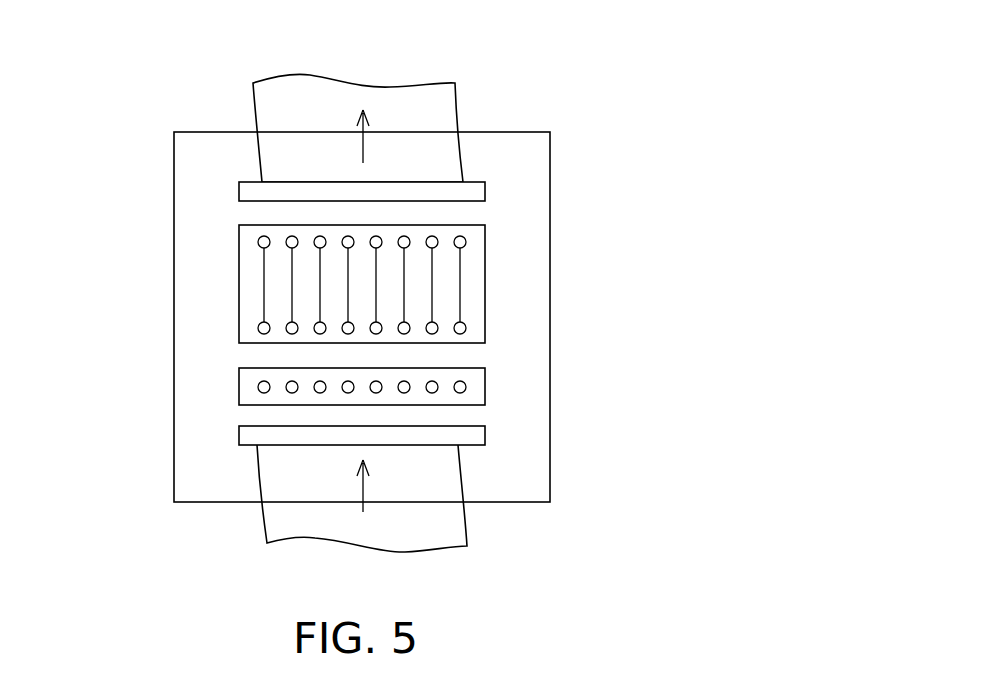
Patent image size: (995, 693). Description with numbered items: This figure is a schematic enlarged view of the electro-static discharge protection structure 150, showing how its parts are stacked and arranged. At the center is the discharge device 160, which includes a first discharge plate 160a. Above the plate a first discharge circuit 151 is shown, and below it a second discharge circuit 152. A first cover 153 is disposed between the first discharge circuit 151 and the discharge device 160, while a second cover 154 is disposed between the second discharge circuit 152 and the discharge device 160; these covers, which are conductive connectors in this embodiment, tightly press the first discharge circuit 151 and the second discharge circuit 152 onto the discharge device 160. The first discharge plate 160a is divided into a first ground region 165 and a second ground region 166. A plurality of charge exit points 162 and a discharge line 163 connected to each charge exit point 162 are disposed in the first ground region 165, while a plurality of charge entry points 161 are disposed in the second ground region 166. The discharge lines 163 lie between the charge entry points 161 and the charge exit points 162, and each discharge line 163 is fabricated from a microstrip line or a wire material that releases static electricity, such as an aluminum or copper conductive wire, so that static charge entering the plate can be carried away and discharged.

The electro-static discharge protection structure 150 is at (363, 307).
The first discharge circuit 151 is at (435, 109).
The second discharge circuit 152 is at (448, 515).
The first cover 153 is at (475, 194).
The second cover 154 is at (252, 433).
The discharge device 160 is at (88, 183).
The first discharge plate 160a is at (528, 263).
The charge entry points 161 is at (258, 387).
The charge exit points 162 is at (258, 242).
The discharge line 163 is at (263, 285).
The first ground region 165 is at (278, 234).
The second ground region 166 is at (248, 394).